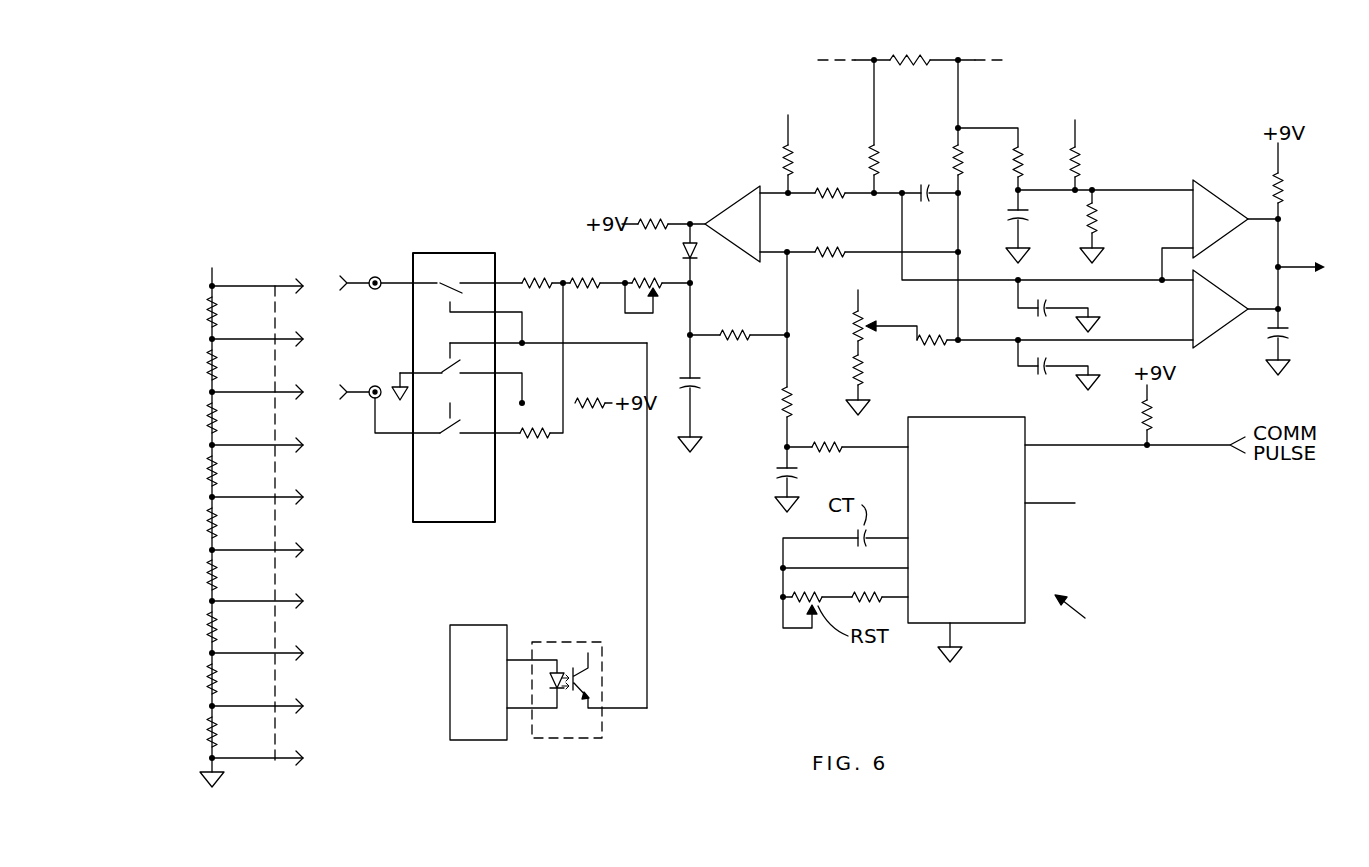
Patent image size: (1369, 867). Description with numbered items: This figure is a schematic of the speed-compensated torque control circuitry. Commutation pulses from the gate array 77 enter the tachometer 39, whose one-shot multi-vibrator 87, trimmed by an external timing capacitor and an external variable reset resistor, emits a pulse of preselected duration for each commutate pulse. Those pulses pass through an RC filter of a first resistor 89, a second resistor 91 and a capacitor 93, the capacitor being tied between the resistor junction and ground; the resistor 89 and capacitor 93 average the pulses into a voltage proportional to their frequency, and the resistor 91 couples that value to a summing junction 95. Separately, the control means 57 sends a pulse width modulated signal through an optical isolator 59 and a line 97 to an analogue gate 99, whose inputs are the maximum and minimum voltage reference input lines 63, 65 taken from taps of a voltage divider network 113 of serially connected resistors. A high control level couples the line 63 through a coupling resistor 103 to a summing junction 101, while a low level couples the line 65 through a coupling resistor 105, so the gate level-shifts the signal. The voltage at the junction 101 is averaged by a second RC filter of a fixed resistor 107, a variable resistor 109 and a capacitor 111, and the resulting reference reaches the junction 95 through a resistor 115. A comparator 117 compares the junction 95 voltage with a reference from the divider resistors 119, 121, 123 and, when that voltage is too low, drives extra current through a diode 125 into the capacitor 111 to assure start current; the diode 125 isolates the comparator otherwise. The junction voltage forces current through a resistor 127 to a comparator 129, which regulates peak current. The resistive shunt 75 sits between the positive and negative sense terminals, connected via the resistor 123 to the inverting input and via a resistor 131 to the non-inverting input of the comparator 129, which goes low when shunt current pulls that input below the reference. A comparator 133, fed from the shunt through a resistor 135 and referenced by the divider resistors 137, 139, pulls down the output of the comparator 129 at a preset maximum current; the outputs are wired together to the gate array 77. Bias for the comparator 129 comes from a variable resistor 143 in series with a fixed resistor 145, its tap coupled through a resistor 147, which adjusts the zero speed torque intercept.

The voltage divider network 113 is at (202, 292).
The maximum voltage reference input line 63 is at (360, 281).
The minimum voltage reference input line 65 is at (360, 390).
The analogue gate 99 is at (495, 517).
The coupling resistor 103 is at (543, 276).
The fixed resistor 107 is at (594, 276).
The variable resistor 109 is at (653, 280).
The coupling resistor 105 is at (534, 440).
The summing junction 101 is at (626, 222).
The diode 125 is at (682, 251).
The comparator 117 is at (762, 216).
The resistor 115 is at (737, 330).
The summing junction 95 is at (786, 337).
The capacitor 111 is at (700, 388).
The resistor 119 is at (793, 164).
The resistor 121 is at (834, 190).
The resistor 123 is at (882, 164).
The resistor 127 is at (834, 252).
The resistor 131 is at (964, 164).
The resistive shunt 75 is at (918, 66).
The second resistor 91 is at (780, 406).
The first resistor 89 is at (830, 447).
The capacitor 93 is at (775, 476).
The variable resistor 143 is at (851, 320).
The fixed resistor 145 is at (851, 374).
The resistor 147 is at (931, 336).
The resistor 135 is at (1040, 148).
The resistor 137 is at (1108, 148).
The resistor 139 is at (1098, 219).
The comparator 133 is at (1222, 194).
The comparator 129 is at (1228, 294).
The gate array 77 is at (1317, 229).
The multi-vibrator 87 is at (1016, 539).
The tachometer 39 is at (1086, 615).
The control means 57 is at (478, 682).
The optical isolator 59 is at (556, 642).
The line 97 is at (647, 538).